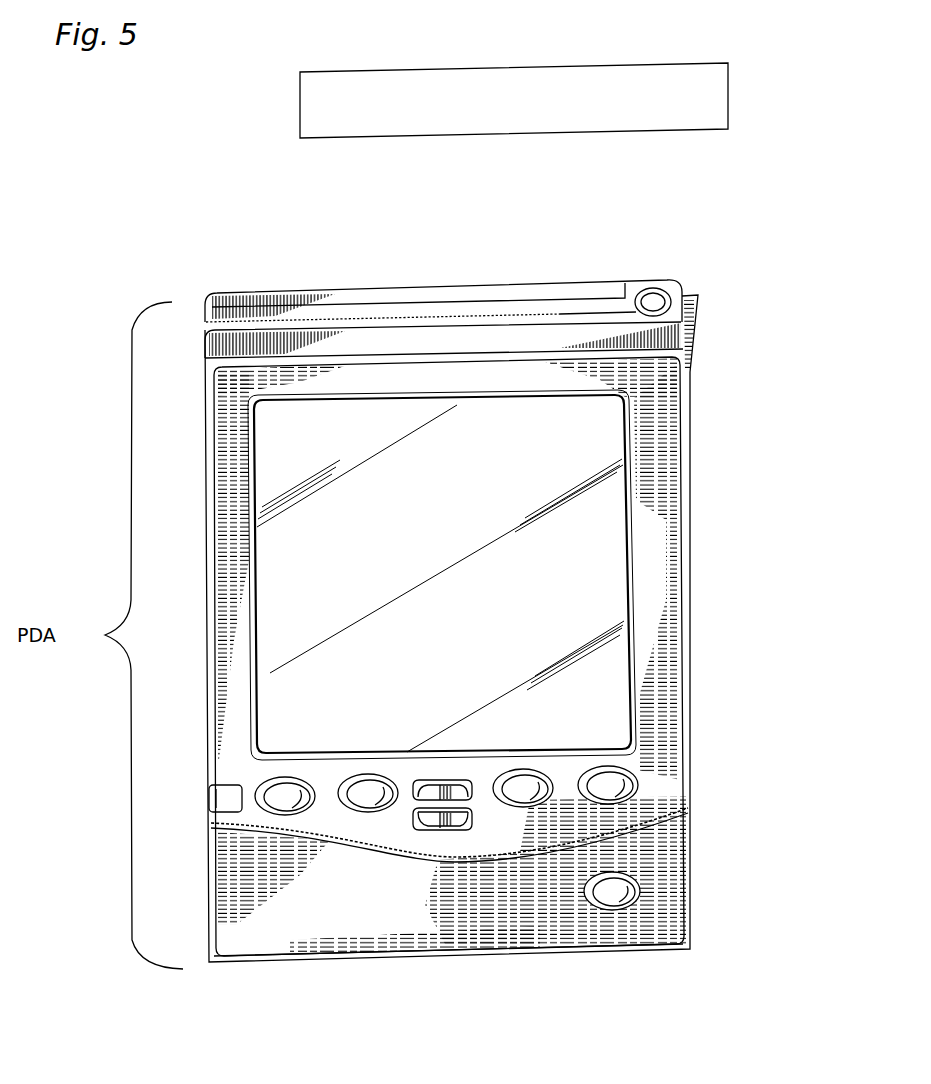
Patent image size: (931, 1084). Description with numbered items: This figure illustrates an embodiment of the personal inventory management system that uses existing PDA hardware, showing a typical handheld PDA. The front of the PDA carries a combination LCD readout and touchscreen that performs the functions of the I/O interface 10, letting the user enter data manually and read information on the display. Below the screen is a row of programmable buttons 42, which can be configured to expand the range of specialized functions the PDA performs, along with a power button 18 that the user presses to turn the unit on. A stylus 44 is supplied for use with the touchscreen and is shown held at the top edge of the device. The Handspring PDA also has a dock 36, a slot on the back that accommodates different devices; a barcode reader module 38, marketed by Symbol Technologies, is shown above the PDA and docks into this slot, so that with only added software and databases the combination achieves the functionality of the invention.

The I/O interface 10 is at (600, 527).
The power button 18 is at (614, 893).
The dock 36 is at (437, 255).
The barcode reader module 38 is at (313, 103).
The programmable buttons 42 is at (283, 808).
The stylus 44 is at (703, 318).